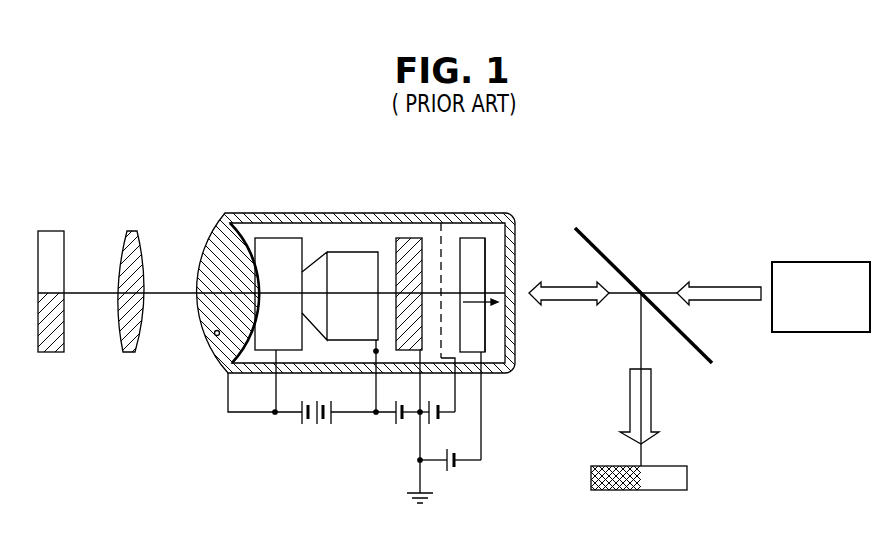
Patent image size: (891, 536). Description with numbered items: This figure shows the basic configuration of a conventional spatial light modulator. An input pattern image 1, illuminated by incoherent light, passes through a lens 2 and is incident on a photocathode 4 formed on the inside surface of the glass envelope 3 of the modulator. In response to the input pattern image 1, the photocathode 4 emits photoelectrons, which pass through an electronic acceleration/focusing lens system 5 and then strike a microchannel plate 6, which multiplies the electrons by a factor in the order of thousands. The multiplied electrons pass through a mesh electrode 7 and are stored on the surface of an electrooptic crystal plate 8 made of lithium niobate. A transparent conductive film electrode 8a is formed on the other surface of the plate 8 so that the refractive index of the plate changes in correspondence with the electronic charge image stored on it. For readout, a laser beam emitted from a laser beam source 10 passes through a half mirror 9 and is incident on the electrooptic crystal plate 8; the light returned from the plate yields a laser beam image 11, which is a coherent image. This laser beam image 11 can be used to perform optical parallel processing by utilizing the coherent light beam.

The input pattern image 1 is at (50, 231).
The lens 2 is at (131, 231).
The glass envelope 3 is at (242, 213).
The photocathode 4 is at (215, 337).
The electronic acceleration/focusing lens system 5 is at (353, 237).
The microchannel plate 6 is at (409, 238).
The mesh electrode 7 is at (446, 232).
The electrooptic crystal plate 8 is at (478, 238).
The transparent conductive film electrode 8a is at (485, 250).
The half mirror 9 is at (606, 258).
The laser beam source 10 is at (818, 262).
The laser beam image 11 is at (687, 478).